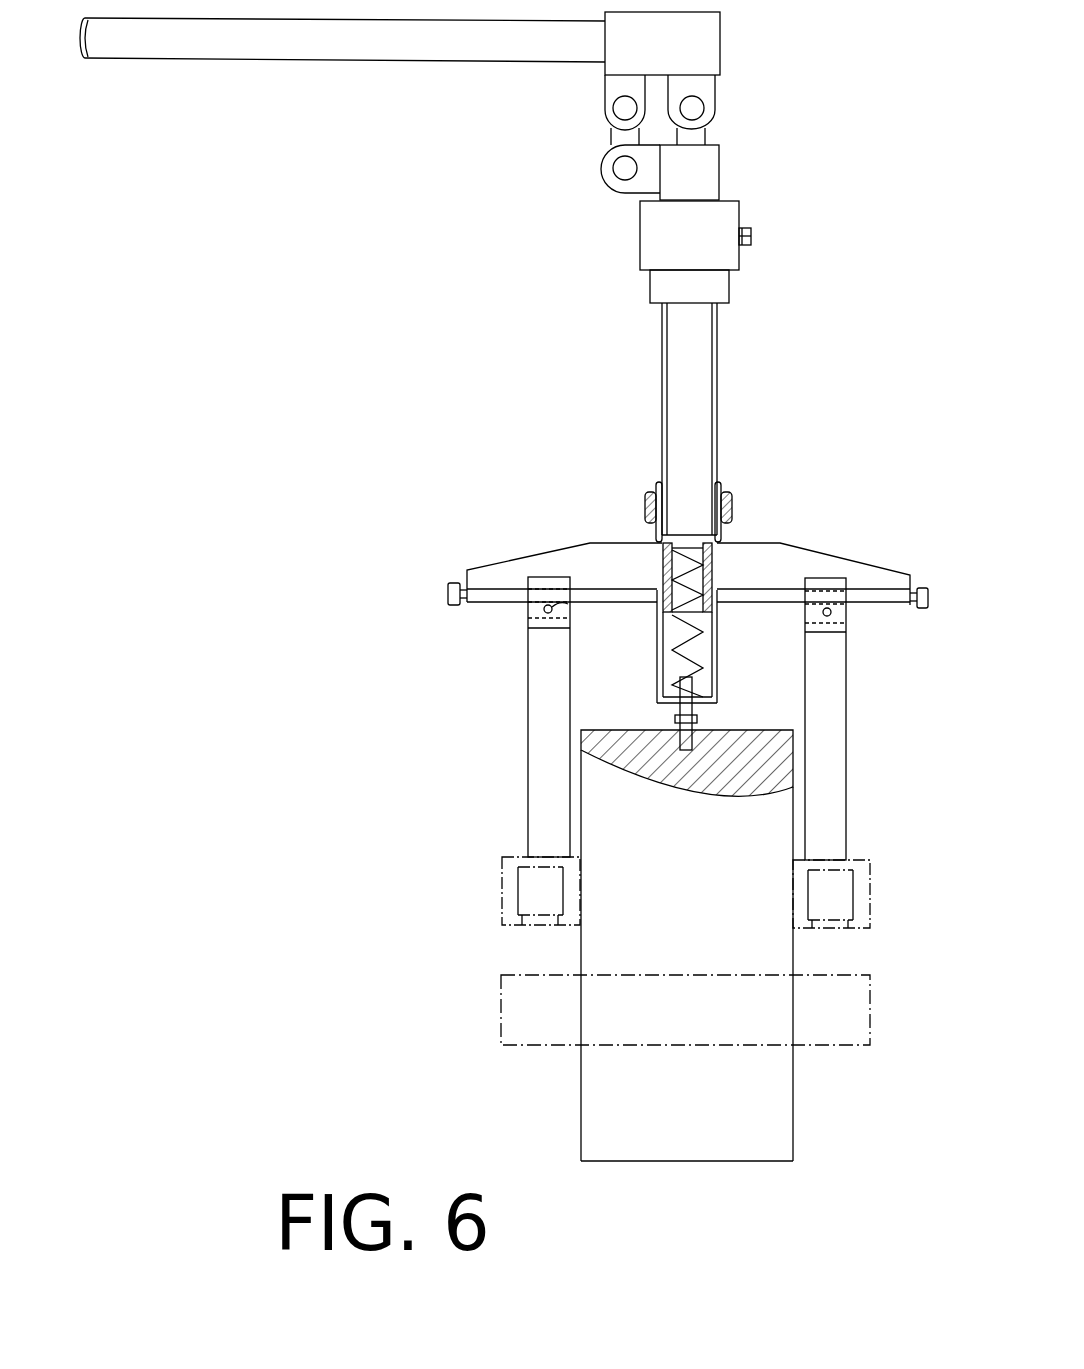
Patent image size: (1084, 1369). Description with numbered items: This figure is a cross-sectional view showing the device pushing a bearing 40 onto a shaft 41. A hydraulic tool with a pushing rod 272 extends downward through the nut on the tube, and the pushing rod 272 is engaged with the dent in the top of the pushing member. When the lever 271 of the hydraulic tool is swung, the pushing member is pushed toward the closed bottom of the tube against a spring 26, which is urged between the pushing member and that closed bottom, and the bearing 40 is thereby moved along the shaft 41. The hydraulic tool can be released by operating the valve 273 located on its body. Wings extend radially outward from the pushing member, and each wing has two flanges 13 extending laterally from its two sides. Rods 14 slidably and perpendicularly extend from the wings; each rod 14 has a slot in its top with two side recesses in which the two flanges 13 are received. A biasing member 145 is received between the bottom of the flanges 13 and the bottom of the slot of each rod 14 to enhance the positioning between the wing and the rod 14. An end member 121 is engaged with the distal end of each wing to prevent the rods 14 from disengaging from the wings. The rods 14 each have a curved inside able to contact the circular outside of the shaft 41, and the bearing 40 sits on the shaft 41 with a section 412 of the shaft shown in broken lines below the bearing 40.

The lever 271 is at (332, 40).
The pushing rod 272 is at (685, 388).
The valve 273 is at (748, 247).
The flanges 13 is at (493, 602).
The biasing member 145 is at (831, 607).
The end member 121 is at (920, 610).
The spring 26 is at (677, 660).
The rods 14 is at (817, 800).
The bearing 40 is at (848, 906).
The shaft 41 is at (765, 1104).
The cylinder section 412 is at (605, 1018).